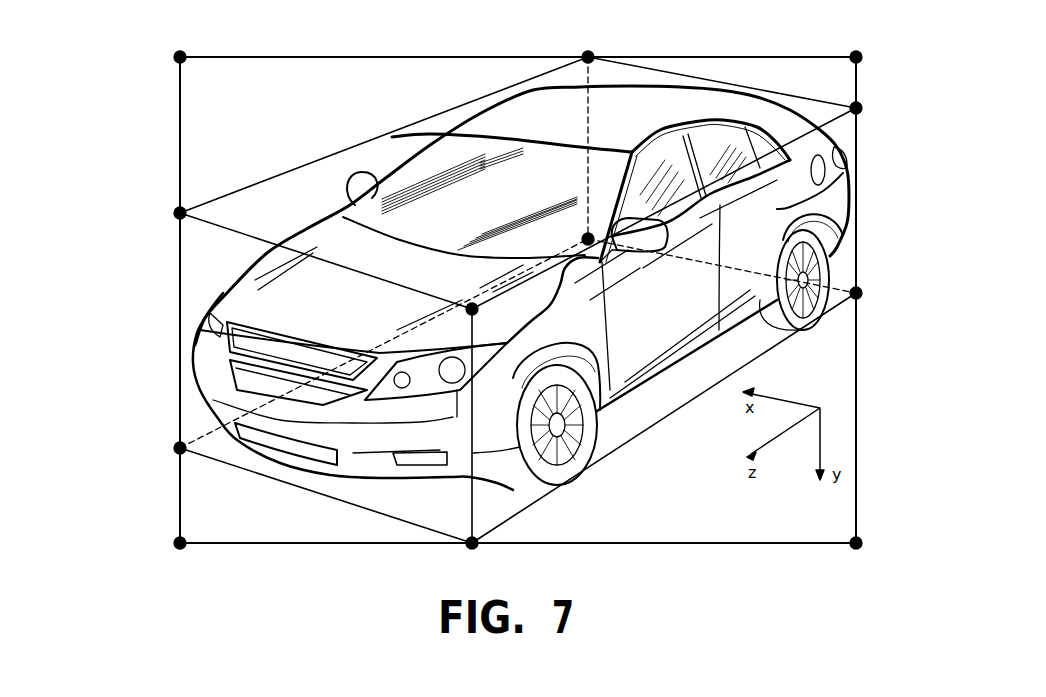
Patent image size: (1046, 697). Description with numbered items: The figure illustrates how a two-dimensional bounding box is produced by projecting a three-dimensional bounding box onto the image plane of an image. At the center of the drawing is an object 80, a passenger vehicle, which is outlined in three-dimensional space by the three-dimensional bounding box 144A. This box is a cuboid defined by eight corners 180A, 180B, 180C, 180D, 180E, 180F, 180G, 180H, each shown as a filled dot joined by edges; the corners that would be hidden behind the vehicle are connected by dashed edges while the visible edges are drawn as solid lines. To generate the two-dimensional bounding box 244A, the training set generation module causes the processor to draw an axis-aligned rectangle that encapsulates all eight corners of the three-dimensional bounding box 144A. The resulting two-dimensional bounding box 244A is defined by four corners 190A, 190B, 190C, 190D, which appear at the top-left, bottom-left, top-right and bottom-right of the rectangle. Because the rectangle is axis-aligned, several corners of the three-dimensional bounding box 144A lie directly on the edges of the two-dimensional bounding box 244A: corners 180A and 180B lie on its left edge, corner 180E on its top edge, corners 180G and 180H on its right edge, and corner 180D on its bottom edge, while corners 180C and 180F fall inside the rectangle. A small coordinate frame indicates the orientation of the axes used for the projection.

The object 80 is at (777, 210).
The 3D bounding box 144A is at (264, 185).
The 2D bounding box 244A is at (178, 133).
The corner 180A is at (180, 213).
The corner 180B is at (180, 448).
The corner 180C is at (472, 309).
The corner 180D is at (472, 543).
The corner 180E is at (588, 57).
The corner 180F is at (588, 239).
The corner 180G is at (856, 108).
The corner 180H is at (856, 293).
The corner 190A is at (180, 57).
The corner 190B is at (180, 543).
The corner 190C is at (856, 57).
The corner 190D is at (856, 543).